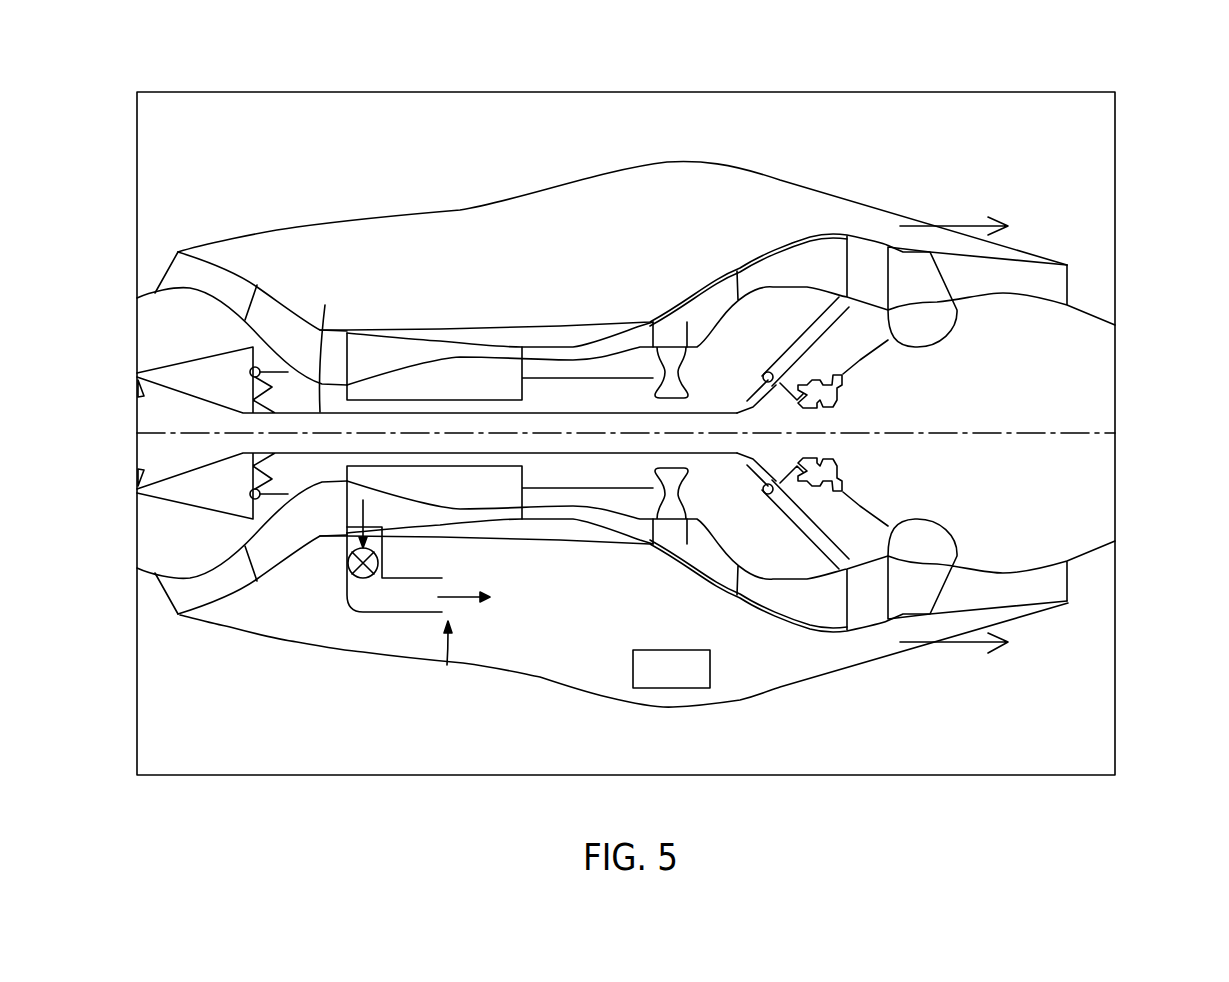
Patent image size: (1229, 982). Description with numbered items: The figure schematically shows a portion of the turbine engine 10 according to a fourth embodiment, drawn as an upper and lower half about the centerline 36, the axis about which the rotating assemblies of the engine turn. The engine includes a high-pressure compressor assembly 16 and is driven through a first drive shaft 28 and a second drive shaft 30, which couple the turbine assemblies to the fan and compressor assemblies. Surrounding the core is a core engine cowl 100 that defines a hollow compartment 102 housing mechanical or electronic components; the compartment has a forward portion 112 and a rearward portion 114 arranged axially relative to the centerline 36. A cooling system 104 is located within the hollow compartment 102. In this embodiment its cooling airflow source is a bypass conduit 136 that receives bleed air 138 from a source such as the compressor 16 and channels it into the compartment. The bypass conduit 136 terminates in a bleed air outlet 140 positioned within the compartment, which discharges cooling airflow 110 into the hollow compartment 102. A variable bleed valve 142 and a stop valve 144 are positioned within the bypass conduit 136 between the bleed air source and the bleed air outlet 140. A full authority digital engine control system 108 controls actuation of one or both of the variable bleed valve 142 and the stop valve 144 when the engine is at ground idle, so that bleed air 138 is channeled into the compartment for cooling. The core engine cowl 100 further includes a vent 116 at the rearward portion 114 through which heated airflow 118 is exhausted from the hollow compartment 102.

The turbine engine 10 is at (1152, 77).
The high-pressure compressor assembly 16 is at (442, 310).
The first drive shaft 28 is at (325, 308).
The second drive shaft 30 is at (593, 378).
The centerline 36 is at (1085, 433).
The core engine cowl 100 is at (472, 205).
The hollow compartment 102 is at (565, 249).
The cooling system 104 is at (258, 618).
The full authority digital engine control (FADEC) system 108 is at (695, 688).
The cooling airflow 110 is at (460, 600).
The forward portion 112 is at (251, 246).
The rearward portion 114 is at (810, 214).
The vent 116 is at (936, 204).
The heated airflow 118 is at (968, 226).
The bypass conduit 136 is at (367, 617).
The bleed air 138 is at (365, 512).
The bleed air outlet 140 is at (447, 665).
The variable bleed valve 142 is at (332, 534).
The stop valve 144 is at (343, 563).